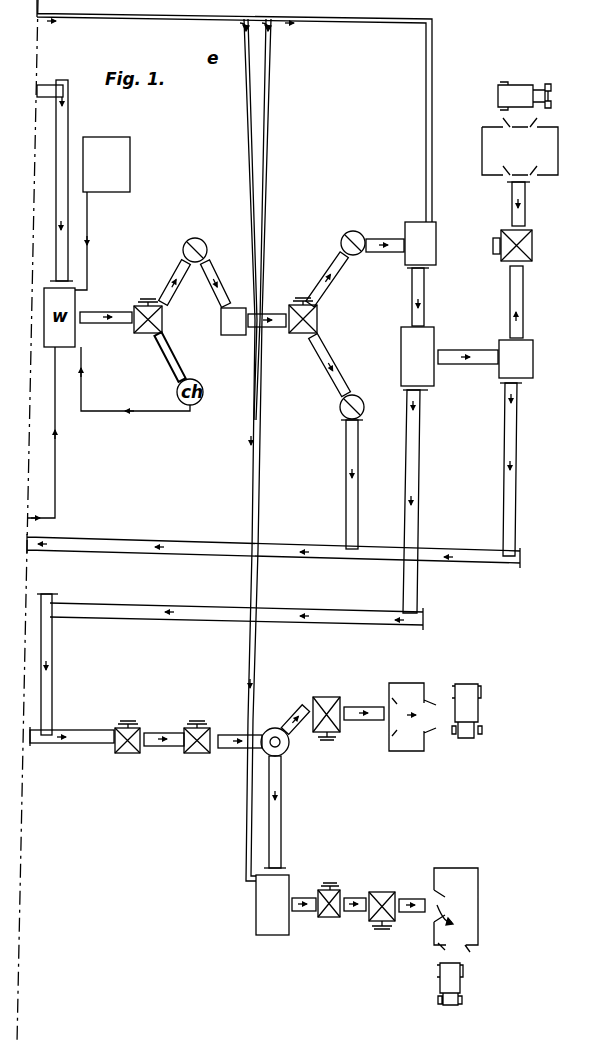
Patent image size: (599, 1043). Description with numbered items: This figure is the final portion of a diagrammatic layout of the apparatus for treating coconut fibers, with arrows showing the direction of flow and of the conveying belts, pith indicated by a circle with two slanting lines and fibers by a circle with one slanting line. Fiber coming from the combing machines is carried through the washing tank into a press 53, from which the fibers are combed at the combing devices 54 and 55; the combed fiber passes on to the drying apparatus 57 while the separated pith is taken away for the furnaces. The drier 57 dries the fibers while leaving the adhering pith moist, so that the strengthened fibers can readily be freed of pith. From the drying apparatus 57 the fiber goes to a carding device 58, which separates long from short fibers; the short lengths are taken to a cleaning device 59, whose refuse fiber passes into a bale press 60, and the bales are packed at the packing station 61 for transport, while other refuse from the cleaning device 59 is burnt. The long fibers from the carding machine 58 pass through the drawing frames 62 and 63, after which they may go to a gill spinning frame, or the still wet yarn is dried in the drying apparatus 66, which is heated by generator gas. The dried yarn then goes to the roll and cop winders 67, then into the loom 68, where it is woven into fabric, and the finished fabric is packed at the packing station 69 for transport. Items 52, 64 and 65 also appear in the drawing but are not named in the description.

The supply vessel 52 is at (102, 213).
The press 53 is at (147, 302).
The combing device 54 is at (228, 335).
The combing device 55 is at (318, 313).
The drying apparatus 57 is at (417, 229).
The carding device 58 is at (411, 370).
The cleaning device 59 is at (508, 368).
The bale press 60 is at (504, 236).
The packing station 61 is at (520, 128).
The drawing frame 62 is at (125, 752).
The drawing frame 63 is at (194, 752).
The valve 64 is at (328, 703).
The hopper 65 is at (412, 750).
The drying apparatus 66 is at (272, 915).
The roll and cop winders 67 is at (331, 917).
The loom 68 is at (382, 893).
The packing station 69 is at (456, 936).